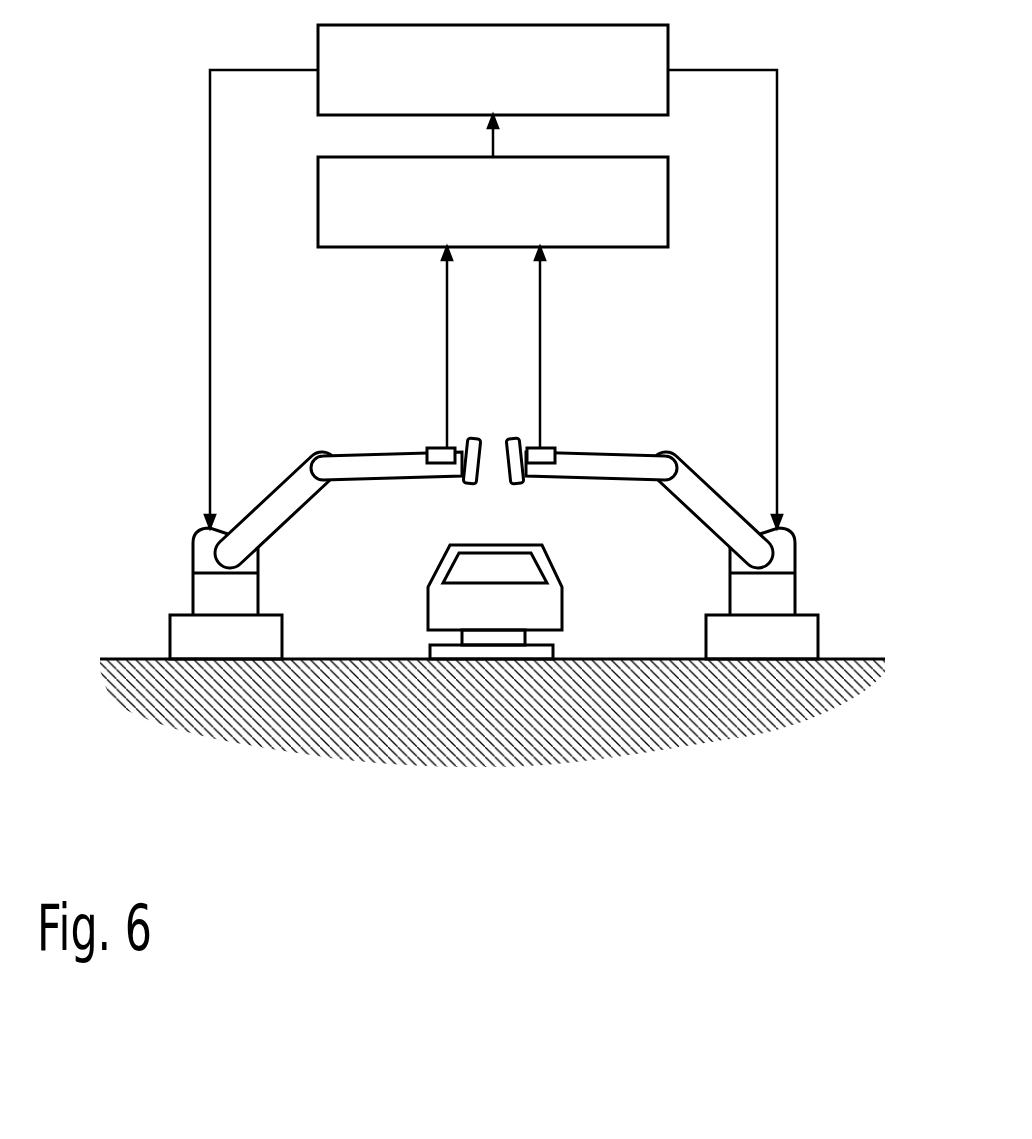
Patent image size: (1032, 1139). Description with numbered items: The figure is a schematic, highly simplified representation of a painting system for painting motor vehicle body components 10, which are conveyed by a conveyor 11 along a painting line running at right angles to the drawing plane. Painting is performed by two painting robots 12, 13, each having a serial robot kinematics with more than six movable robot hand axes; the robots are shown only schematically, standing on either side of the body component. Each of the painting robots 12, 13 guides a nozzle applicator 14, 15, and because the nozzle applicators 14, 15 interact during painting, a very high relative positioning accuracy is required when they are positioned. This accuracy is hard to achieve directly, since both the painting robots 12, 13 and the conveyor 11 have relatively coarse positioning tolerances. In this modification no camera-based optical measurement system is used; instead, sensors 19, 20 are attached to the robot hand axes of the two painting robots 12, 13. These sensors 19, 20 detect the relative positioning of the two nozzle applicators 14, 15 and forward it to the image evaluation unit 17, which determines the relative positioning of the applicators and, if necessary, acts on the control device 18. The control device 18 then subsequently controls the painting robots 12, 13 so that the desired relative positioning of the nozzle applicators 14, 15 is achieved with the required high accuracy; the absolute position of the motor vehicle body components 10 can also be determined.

The motor vehicle body component 10 is at (567, 603).
The conveyor 11 is at (430, 648).
The painting robot 12 is at (160, 589).
The painting robot 13 is at (818, 578).
The nozzle applicator 14 is at (467, 484).
The nozzle applicator 15 is at (516, 484).
The image evaluation unit 17 is at (670, 173).
The control device 18 is at (670, 40).
The sensor 19 is at (436, 449).
The sensor 20 is at (550, 448).